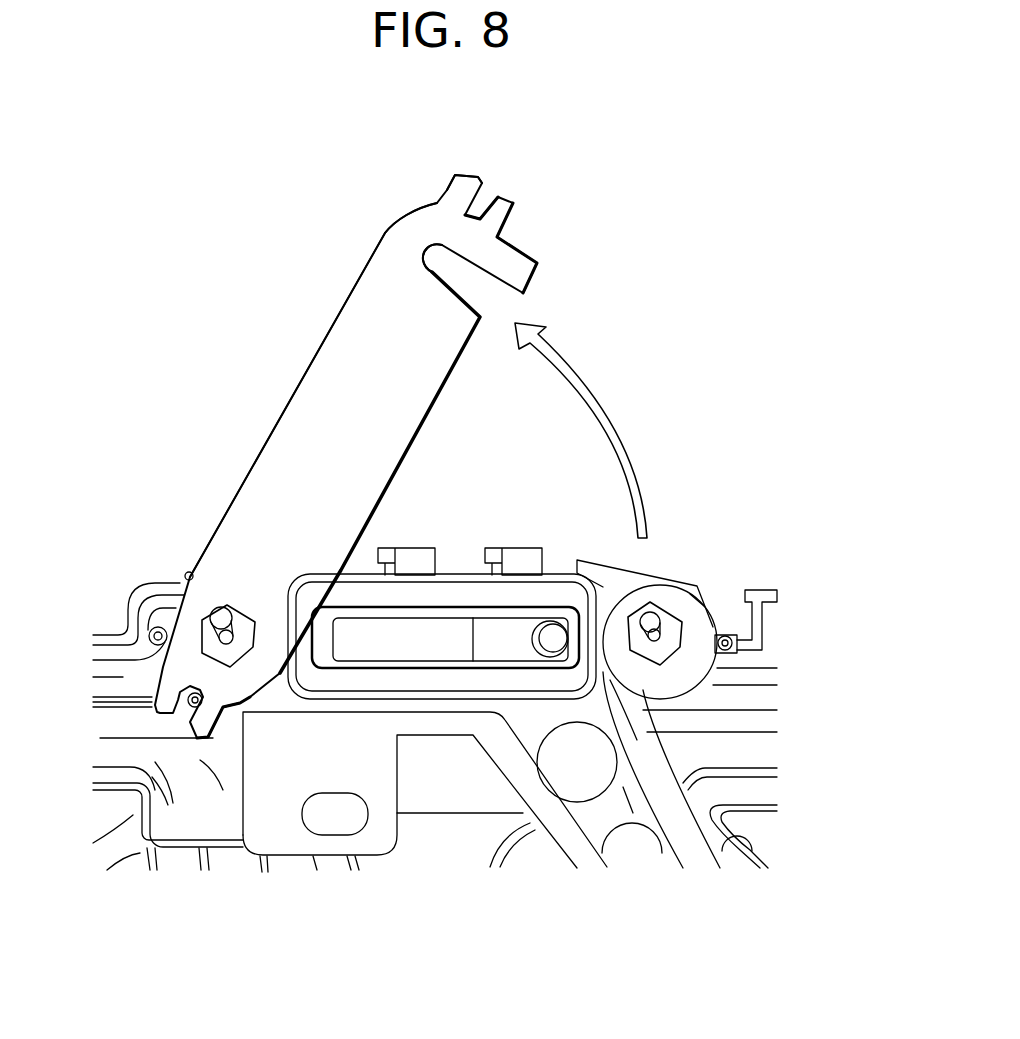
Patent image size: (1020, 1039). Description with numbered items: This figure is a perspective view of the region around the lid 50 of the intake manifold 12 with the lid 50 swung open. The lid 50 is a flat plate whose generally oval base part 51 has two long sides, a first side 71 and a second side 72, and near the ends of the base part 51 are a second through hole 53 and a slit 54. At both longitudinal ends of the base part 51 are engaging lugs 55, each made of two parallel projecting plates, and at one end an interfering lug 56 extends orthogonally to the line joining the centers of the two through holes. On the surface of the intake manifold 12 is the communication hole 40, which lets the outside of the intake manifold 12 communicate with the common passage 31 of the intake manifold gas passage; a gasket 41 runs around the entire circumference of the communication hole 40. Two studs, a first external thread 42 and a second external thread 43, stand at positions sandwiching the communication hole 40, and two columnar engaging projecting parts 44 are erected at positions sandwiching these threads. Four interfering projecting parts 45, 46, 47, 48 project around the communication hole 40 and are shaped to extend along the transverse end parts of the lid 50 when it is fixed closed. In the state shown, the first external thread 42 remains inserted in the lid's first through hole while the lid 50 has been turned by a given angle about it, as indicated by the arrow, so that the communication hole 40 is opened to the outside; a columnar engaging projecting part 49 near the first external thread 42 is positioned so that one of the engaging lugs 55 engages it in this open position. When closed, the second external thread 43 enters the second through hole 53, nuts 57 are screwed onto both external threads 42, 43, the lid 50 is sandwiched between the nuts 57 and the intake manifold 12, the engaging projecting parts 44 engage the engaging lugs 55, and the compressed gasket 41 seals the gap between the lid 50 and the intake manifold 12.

The intake manifold 12 is at (456, 673).
The common passage 31 is at (360, 640).
The communication hole 40 is at (450, 620).
The gasket 41 is at (553, 598).
The first external thread 42 is at (218, 614).
The second external thread 43 is at (654, 606).
The engaging projecting part 44 is at (148, 630).
The interfering projecting part 45 is at (190, 574).
The interfering projecting part 46 is at (392, 548).
The interfering projecting part 47 is at (490, 548).
The interfering projecting part 48 is at (650, 567).
The engaging projecting part 49 is at (190, 706).
The lid 50 is at (317, 423).
The base part 51 is at (350, 325).
The second through hole 53 is at (418, 262).
The slit 54 is at (455, 292).
The engaging lug 55 is at (461, 161).
The interfering lug 56 is at (538, 256).
The nut 57 is at (246, 612).
The first side 71 is at (425, 431).
The second side 72 is at (298, 370).